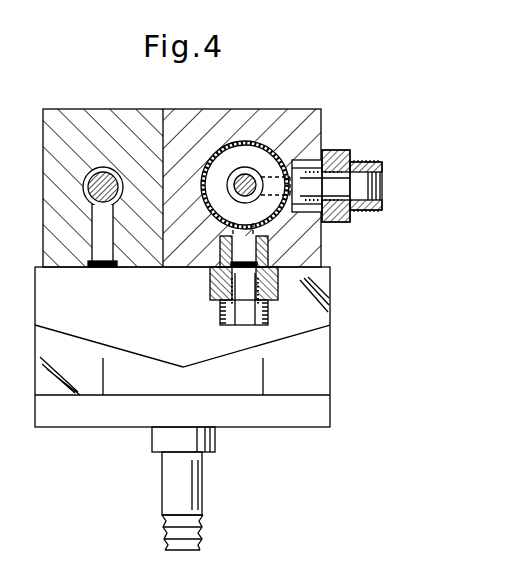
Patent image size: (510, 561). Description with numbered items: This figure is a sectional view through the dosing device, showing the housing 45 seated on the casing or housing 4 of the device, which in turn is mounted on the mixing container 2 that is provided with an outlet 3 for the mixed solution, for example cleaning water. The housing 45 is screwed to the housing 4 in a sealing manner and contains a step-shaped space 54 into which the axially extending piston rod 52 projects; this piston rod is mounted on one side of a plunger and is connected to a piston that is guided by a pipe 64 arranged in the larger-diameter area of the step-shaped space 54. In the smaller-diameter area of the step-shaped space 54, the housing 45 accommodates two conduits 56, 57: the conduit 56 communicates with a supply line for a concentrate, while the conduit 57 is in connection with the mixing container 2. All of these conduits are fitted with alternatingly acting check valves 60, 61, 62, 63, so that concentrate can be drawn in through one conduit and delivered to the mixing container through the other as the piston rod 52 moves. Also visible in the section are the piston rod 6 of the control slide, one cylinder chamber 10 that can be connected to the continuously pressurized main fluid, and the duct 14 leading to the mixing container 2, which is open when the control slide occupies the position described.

The mixing container 2 is at (308, 350).
The outlet 3 is at (198, 486).
The housing 4 is at (78, 113).
The piston rod 6 is at (97, 187).
The cylinder chamber 10 is at (84, 180).
The duct 14 is at (92, 250).
The housing 45 is at (178, 118).
The piston rod 52 is at (245, 170).
The step-shaped space 54 is at (230, 186).
The conduit 56 is at (298, 162).
The conduit 57 is at (248, 243).
The check valve 60 is at (354, 169).
The check valve 61 is at (221, 280).
The check valve 62 is at (352, 160).
The check valve 63 is at (212, 284).
The pipe 64 is at (214, 158).